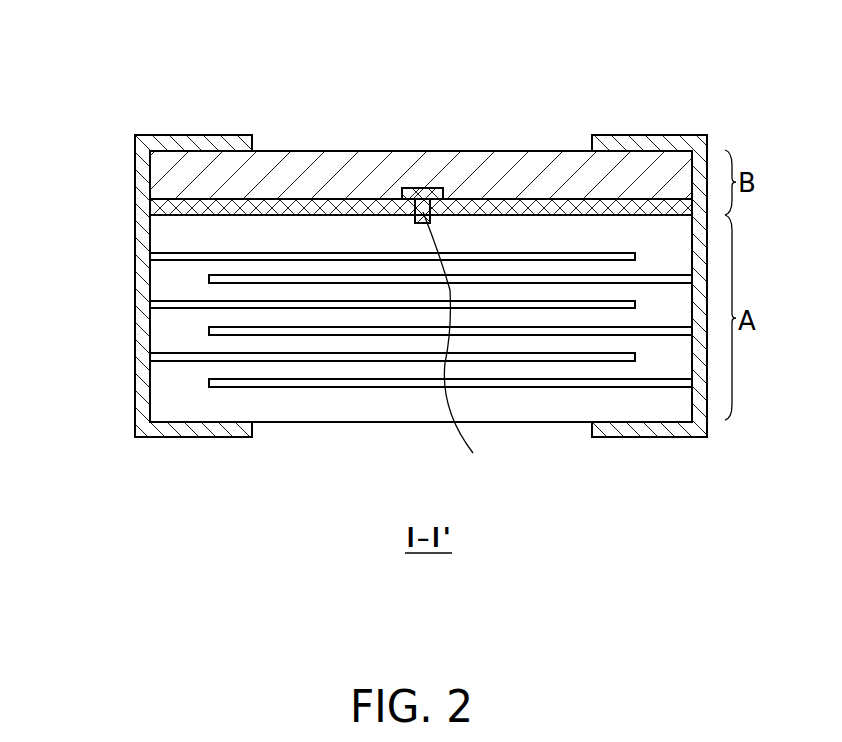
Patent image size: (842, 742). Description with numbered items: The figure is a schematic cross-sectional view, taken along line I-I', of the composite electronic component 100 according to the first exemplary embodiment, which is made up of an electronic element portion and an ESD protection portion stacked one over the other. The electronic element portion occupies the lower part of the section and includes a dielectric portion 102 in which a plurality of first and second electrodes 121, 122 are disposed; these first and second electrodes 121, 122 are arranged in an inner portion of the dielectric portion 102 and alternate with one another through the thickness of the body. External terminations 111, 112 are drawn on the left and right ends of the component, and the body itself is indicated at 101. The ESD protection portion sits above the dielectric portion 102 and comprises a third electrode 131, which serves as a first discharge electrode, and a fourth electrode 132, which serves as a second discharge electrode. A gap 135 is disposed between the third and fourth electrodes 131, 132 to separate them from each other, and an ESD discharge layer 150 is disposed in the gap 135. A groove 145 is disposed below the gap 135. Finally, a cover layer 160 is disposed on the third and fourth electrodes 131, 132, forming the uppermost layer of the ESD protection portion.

The composite electronic component 100 is at (183, 33).
The ceramic body 101 is at (271, 133).
The dielectric portion 102 is at (395, 367).
The first external electrode 111 is at (143, 173).
The second external electrode 112 is at (662, 142).
The first electrode 121 is at (190, 357).
The second electrode 122 is at (292, 380).
The third electrode 131 is at (178, 211).
The fourth electrode 132 is at (563, 206).
The gap 135 is at (423, 199).
The groove 145 is at (460, 346).
The ESD discharge layer 150 is at (408, 188).
The cover layer 160 is at (488, 175).